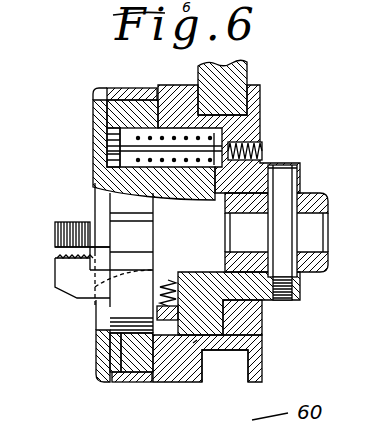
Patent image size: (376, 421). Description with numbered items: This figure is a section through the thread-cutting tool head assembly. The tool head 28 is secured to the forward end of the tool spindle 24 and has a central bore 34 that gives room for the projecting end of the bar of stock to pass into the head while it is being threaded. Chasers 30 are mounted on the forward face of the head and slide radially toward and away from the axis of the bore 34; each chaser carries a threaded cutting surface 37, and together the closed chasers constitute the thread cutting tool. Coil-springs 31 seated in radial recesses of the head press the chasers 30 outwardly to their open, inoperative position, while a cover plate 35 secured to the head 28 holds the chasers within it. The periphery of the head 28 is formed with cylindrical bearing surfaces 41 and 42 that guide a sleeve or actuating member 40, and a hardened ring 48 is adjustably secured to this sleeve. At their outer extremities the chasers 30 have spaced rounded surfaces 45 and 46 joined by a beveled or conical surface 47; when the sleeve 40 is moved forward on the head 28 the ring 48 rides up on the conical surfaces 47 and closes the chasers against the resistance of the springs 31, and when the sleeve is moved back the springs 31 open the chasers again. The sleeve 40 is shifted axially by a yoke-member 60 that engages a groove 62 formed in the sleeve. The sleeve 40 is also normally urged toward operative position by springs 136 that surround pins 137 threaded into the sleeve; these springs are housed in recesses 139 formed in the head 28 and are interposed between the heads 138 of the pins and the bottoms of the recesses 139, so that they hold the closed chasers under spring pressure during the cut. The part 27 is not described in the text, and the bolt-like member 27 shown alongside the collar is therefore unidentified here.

The tool spindle 24 is at (324, 197).
The bolt 27 is at (299, 233).
The tool head 28 is at (205, 275).
The chaser 30 is at (70, 285).
The coil-spring 31 is at (172, 281).
The central bore 34 is at (140, 241).
The cover plate 35 is at (95, 92).
The threaded cutting surface 37 is at (70, 231).
The sleeve 40 is at (257, 115).
The cylindrical bearing surface 41 is at (262, 303).
The cylindrical bearing surface 42 is at (195, 343).
The rounded surface 45 is at (115, 337).
The rounded surface 46 is at (140, 368).
The conical surface 47 is at (127, 333).
The hardened ring 48 is at (112, 355).
The yoke-member 60 is at (242, 82).
The groove 62 is at (238, 362).
The spring 136 is at (181, 80).
The pin 137 is at (177, 207).
The pin head 138 is at (80, 142).
The recess 139 is at (207, 162).